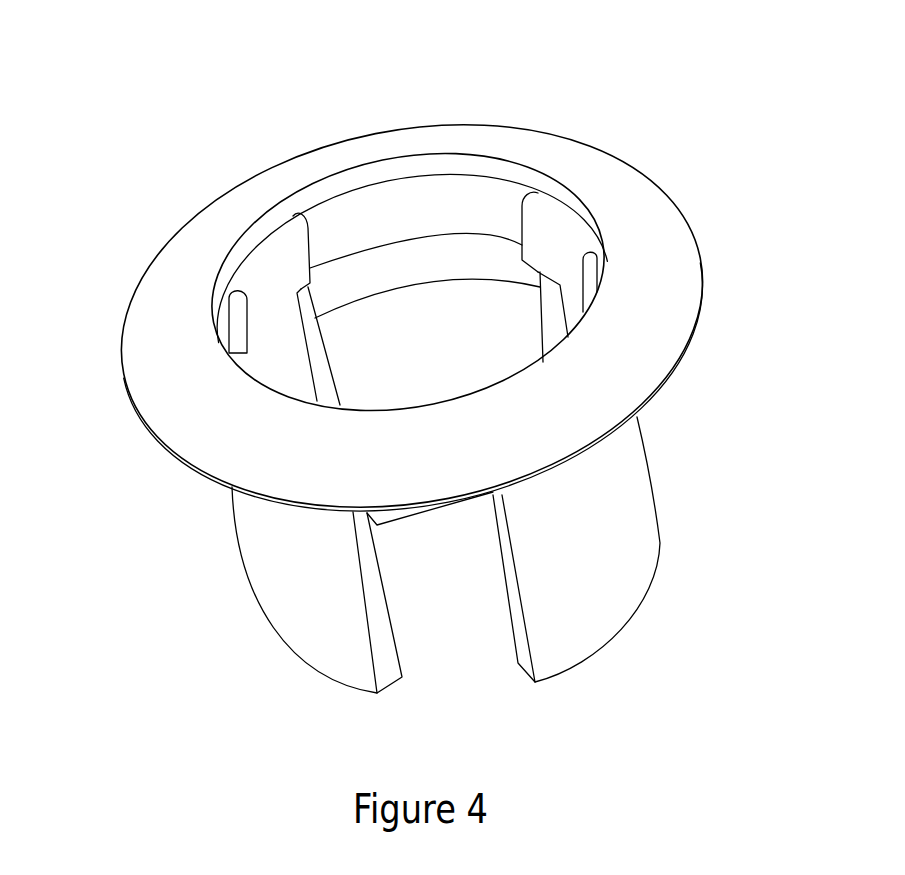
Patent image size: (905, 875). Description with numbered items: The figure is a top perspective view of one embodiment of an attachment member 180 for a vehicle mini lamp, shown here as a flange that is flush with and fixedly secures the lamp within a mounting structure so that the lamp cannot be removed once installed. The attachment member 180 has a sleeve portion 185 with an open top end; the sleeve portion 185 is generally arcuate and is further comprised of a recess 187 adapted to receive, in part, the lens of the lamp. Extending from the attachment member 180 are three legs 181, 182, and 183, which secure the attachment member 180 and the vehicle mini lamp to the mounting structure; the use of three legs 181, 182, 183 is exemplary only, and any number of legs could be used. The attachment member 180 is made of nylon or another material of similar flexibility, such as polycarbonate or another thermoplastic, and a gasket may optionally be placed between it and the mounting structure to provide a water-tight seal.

The attachment member 180 is at (126, 114).
The leg 181 is at (366, 380).
The leg 182 is at (305, 630).
The leg 183 is at (598, 588).
The sleeve portion 185 is at (652, 268).
The recess 187 is at (327, 188).